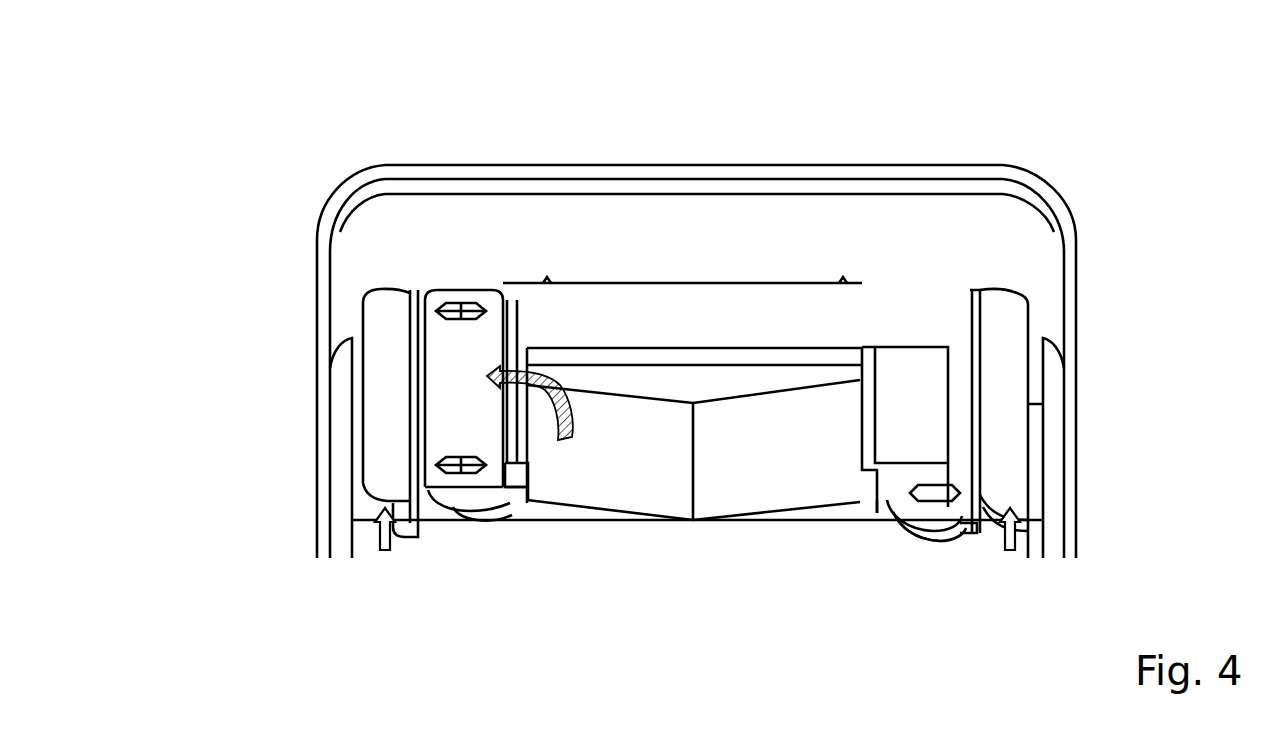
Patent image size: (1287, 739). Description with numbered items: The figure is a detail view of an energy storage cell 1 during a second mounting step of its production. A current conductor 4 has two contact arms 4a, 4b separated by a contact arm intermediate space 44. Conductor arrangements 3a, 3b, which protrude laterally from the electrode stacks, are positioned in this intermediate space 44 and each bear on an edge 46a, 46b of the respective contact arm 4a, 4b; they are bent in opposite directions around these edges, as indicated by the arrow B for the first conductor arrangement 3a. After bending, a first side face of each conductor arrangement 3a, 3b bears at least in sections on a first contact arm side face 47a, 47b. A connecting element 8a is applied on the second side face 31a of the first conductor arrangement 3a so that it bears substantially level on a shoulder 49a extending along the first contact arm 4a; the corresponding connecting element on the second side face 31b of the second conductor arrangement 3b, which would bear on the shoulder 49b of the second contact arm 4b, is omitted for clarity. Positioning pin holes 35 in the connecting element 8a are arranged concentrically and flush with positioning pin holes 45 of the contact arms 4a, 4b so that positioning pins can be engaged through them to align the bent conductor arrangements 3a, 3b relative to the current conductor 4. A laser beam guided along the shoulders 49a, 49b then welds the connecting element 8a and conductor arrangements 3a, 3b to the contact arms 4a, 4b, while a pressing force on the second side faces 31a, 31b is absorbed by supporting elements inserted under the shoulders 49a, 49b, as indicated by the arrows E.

The energy storage cell 1 is at (203, 100).
The first conductor arrangement 3a is at (520, 347).
The second conductor arrangement 3b is at (903, 355).
The current conductor 4 is at (702, 332).
The first contact arm 4a is at (473, 523).
The second contact arm 4b is at (876, 525).
The connecting element 8a is at (442, 398).
The second side face of the first conductor arrangement 31a is at (524, 333).
The second side face of the second conductor arrangement 31b is at (913, 333).
The positioning pin holes 35 is at (461, 303).
The contact arm intermediate space 44 is at (708, 443).
The positioning pin holes of the contact arms 45 is at (948, 350).
The edge of the first contact arm 46a is at (520, 503).
The edge of the second contact arm 46b is at (874, 517).
The first contact arm side face 47a is at (433, 492).
The first contact arm side face 47b is at (973, 413).
The shoulder of the first contact arm 49a is at (400, 532).
The shoulder of the second contact arm 49b is at (986, 513).
The bending arrow B is at (567, 440).
The supporting element arrows E is at (387, 549).